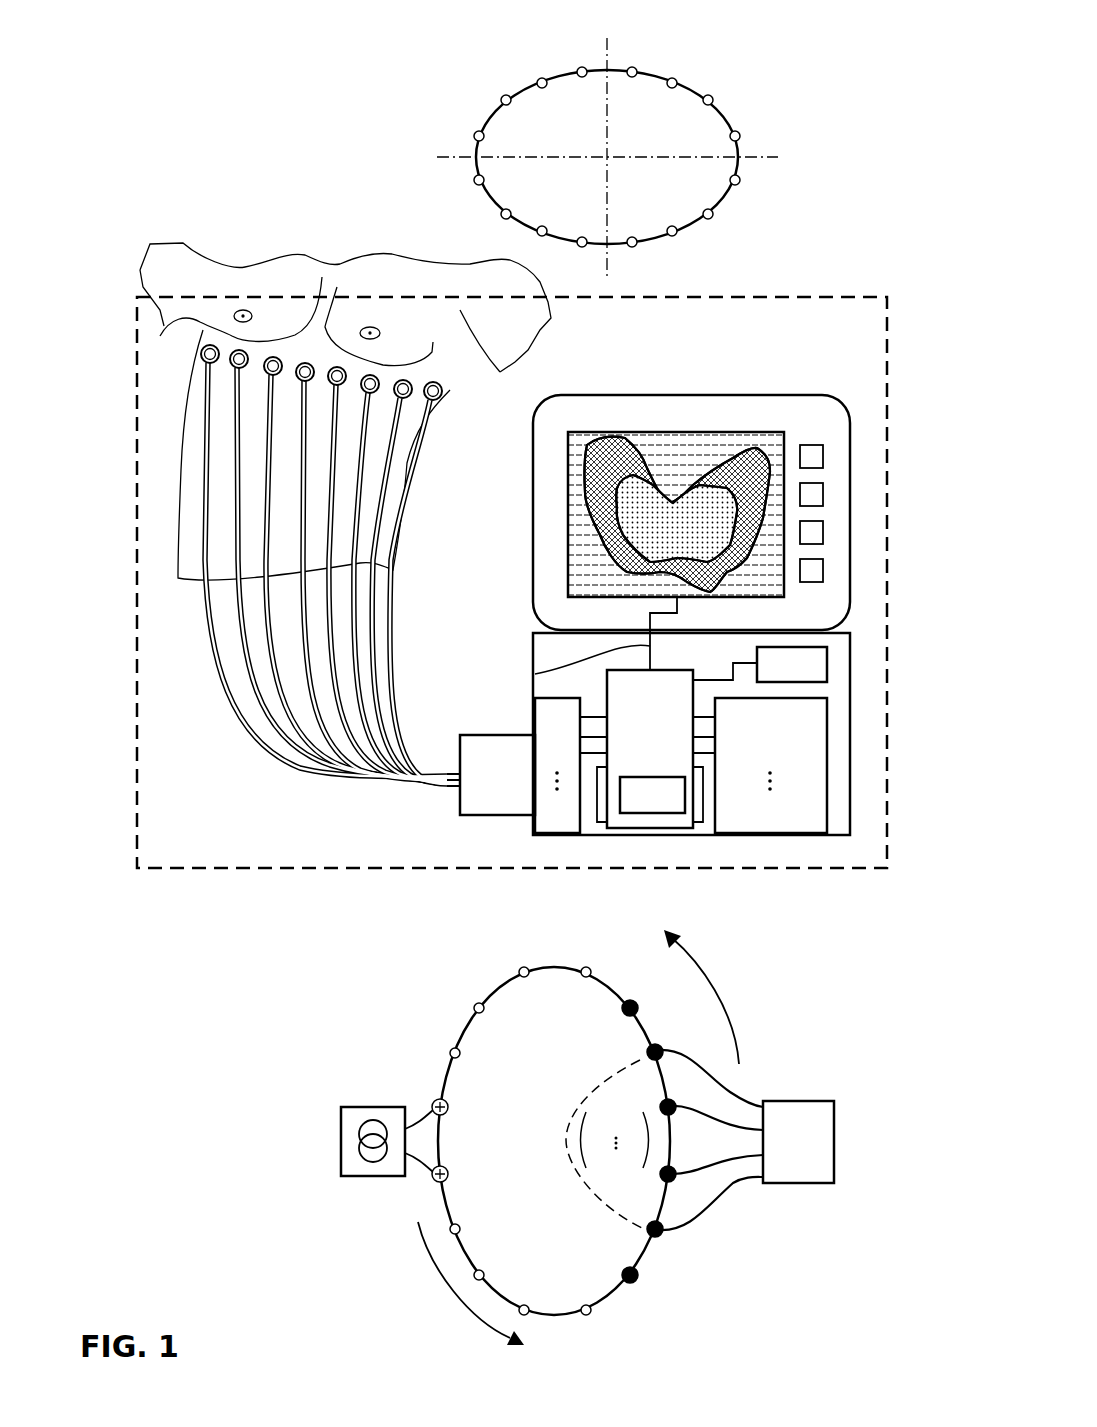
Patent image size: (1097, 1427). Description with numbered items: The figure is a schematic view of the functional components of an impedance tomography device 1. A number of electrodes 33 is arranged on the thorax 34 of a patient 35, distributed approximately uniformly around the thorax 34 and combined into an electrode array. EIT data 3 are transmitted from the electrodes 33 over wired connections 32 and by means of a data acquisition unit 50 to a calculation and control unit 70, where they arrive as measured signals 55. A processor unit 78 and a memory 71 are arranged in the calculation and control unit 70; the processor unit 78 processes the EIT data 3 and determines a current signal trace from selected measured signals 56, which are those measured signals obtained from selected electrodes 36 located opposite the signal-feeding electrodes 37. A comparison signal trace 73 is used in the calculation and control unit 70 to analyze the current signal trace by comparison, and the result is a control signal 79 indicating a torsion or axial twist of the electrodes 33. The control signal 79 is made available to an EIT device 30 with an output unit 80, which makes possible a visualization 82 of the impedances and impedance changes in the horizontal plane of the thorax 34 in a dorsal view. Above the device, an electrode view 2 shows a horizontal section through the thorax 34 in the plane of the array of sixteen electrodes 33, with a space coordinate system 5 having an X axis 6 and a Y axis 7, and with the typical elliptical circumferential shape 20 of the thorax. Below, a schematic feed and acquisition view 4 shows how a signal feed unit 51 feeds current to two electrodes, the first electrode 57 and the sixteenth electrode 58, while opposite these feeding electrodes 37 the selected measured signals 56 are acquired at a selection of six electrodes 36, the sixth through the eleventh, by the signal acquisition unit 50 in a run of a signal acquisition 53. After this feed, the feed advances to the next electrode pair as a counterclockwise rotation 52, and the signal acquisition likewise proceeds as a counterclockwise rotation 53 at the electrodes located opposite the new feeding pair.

The impedance tomography device 1 is at (887, 296).
The electrode view 2 is at (348, 128).
The EIT data 3 is at (447, 790).
The schematic feed and acquisition view 4 is at (224, 1194).
The space coordinate system 5 is at (595, 142).
The X axis 6 is at (445, 157).
The Y axis 7 is at (607, 44).
The elliptical circumferential shape 20 is at (758, 108).
The EIT device 30 is at (776, 395).
The wired connections 32 is at (330, 778).
The electrodes 33 is at (634, 68).
The thorax 34 is at (702, 188).
The patient 35 is at (258, 244).
The selected electrodes 36 is at (633, 1001).
The signal-feeding electrodes 37 is at (434, 1102).
The data acquisition unit 50 is at (497, 815).
The signal feed unit 51 is at (341, 1140).
The counterclockwise rotation 52 is at (448, 1288).
The signal acquisition run 53 is at (720, 995).
The measured signals 55 is at (557, 835).
The selected measured signals 56 is at (828, 756).
The electrode E1 57 is at (263, 370).
The electrode E16 58 is at (297, 377).
The calculation and control unit 70 is at (533, 656).
The memory 71 is at (650, 813).
The comparison signal trace 73 is at (828, 664).
The processor unit 78 is at (620, 830).
The control signal 79 is at (535, 674).
The output unit 80 is at (697, 450).
The visualization 82 is at (612, 455).